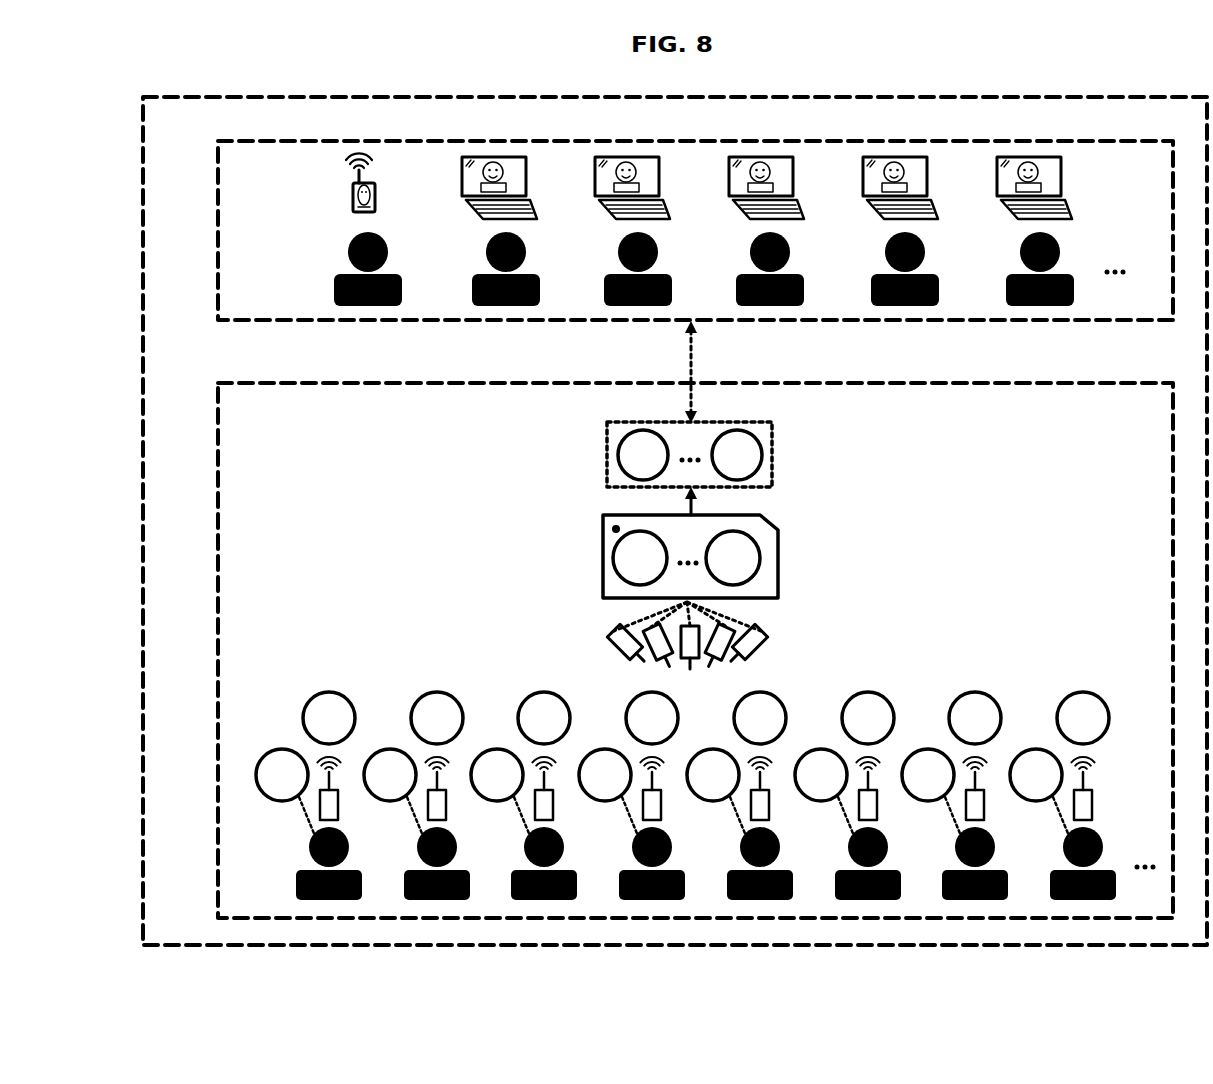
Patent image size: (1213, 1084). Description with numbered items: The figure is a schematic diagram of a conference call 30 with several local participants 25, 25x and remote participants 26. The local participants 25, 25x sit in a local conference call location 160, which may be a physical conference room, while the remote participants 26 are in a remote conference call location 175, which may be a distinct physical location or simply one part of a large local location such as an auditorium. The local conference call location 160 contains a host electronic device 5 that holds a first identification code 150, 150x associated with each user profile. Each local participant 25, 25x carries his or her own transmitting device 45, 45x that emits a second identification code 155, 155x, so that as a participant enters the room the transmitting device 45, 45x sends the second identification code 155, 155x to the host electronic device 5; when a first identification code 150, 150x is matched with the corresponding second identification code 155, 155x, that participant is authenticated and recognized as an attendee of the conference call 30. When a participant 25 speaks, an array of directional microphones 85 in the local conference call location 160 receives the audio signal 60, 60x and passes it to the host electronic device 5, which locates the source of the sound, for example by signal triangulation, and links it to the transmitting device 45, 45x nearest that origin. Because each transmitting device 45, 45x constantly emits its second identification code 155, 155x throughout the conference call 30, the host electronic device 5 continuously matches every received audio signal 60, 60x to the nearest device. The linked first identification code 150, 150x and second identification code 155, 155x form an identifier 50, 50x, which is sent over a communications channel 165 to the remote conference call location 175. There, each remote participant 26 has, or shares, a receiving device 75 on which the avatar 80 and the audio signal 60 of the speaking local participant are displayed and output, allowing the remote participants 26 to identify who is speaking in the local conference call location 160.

The conference call 30 is at (143, 368).
The remote conference call location 175 is at (218, 252).
The local conference call location 160 is at (218, 648).
The remote participant 26 is at (334, 294).
The receiving device 75 is at (375, 195).
The avatar 80 is at (353, 195).
The communications channel 165 is at (691, 358).
The identifier 50 is at (643, 455).
The identifier 50x is at (737, 455).
The host electronic device 5 is at (603, 573).
The first identification code 150 is at (640, 558).
The first identification code 150x is at (733, 558).
The array of directional microphones 85 is at (588, 650).
The second identification code 155 is at (329, 718).
The second identification code 155x is at (760, 718).
The audio signal 60 is at (282, 775).
The audio signal 60x is at (713, 775).
The transmitting device 45 is at (338, 805).
The transmitting device 45x is at (446, 805).
The local participant 25 is at (296, 892).
The local participant 25x is at (404, 892).